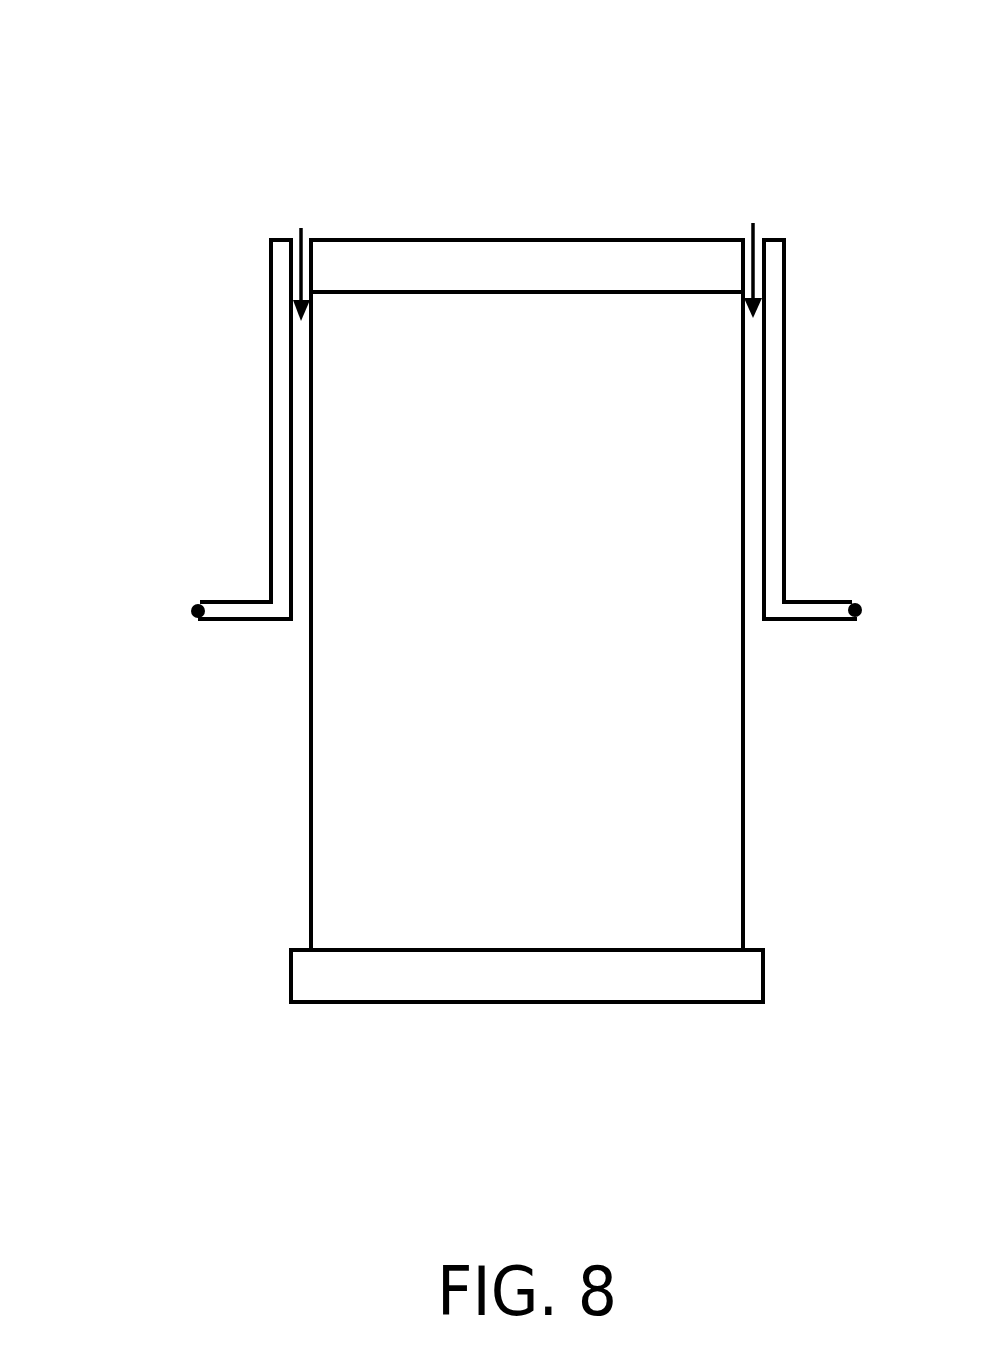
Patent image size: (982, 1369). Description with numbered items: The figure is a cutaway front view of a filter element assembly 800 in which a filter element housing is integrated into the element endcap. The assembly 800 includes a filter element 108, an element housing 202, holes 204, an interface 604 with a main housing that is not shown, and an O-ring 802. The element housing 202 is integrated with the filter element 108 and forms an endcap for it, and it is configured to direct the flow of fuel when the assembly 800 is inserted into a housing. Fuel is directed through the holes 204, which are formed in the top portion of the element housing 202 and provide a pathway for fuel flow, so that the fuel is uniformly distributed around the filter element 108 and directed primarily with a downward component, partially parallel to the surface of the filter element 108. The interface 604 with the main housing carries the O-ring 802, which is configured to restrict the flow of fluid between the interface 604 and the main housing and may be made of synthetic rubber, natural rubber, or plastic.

The filter element assembly 800 is at (194, 108).
The element housing 202 is at (282, 268).
The holes 204 is at (302, 232).
The filter element 108 is at (557, 634).
The O-ring 802 is at (192, 606).
The interface with the main housing 604 is at (165, 633).